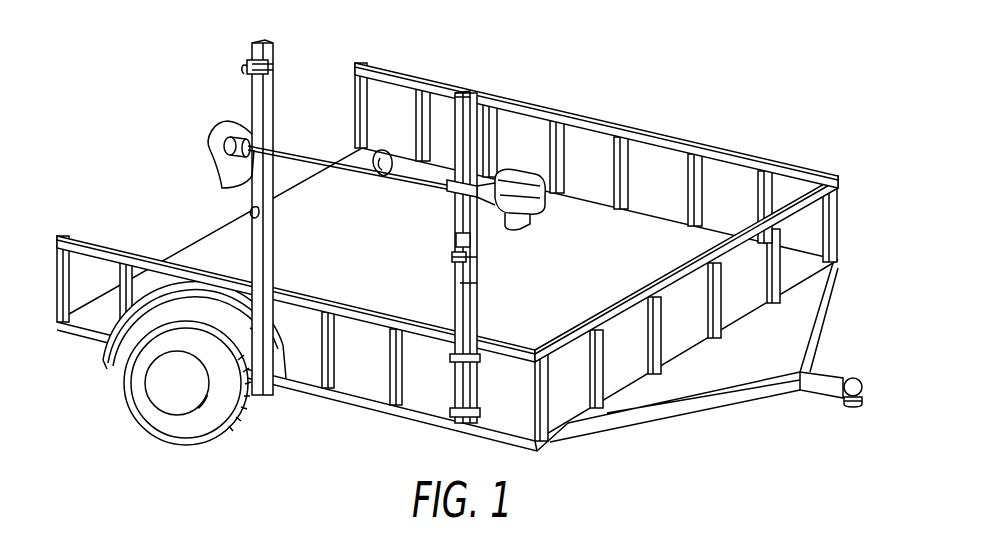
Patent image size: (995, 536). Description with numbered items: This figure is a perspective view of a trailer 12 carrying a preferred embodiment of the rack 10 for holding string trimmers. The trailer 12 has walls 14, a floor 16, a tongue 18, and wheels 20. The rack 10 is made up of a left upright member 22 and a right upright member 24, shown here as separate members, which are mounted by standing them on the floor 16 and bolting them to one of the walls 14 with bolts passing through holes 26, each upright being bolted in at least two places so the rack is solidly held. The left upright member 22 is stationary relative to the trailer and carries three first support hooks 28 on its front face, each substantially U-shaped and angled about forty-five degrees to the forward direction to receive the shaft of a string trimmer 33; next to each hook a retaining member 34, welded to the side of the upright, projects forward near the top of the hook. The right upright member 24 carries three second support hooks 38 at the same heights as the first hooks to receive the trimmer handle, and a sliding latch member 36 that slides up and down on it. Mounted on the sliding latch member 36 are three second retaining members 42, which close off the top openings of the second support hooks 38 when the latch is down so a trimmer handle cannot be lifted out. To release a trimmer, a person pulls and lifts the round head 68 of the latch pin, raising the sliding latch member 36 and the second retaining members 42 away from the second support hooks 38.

The rack 10 is at (462, 248).
The trailer 12 is at (462, 266).
The walls 14 is at (683, 162).
The floor 16 is at (587, 278).
The tongue 18 is at (838, 376).
The wheels 20 is at (172, 435).
The left upright member 22 is at (258, 200).
The right upright member 24 is at (458, 256).
The holes 26 is at (452, 358).
The first support hooks 28 is at (250, 60).
The string trimmer 33 is at (372, 178).
The retaining member 34 is at (268, 66).
The sliding latch member 36 is at (480, 124).
The second support hooks 38 is at (450, 258).
The second retaining members 42 is at (460, 257).
The round head 68 is at (456, 240).